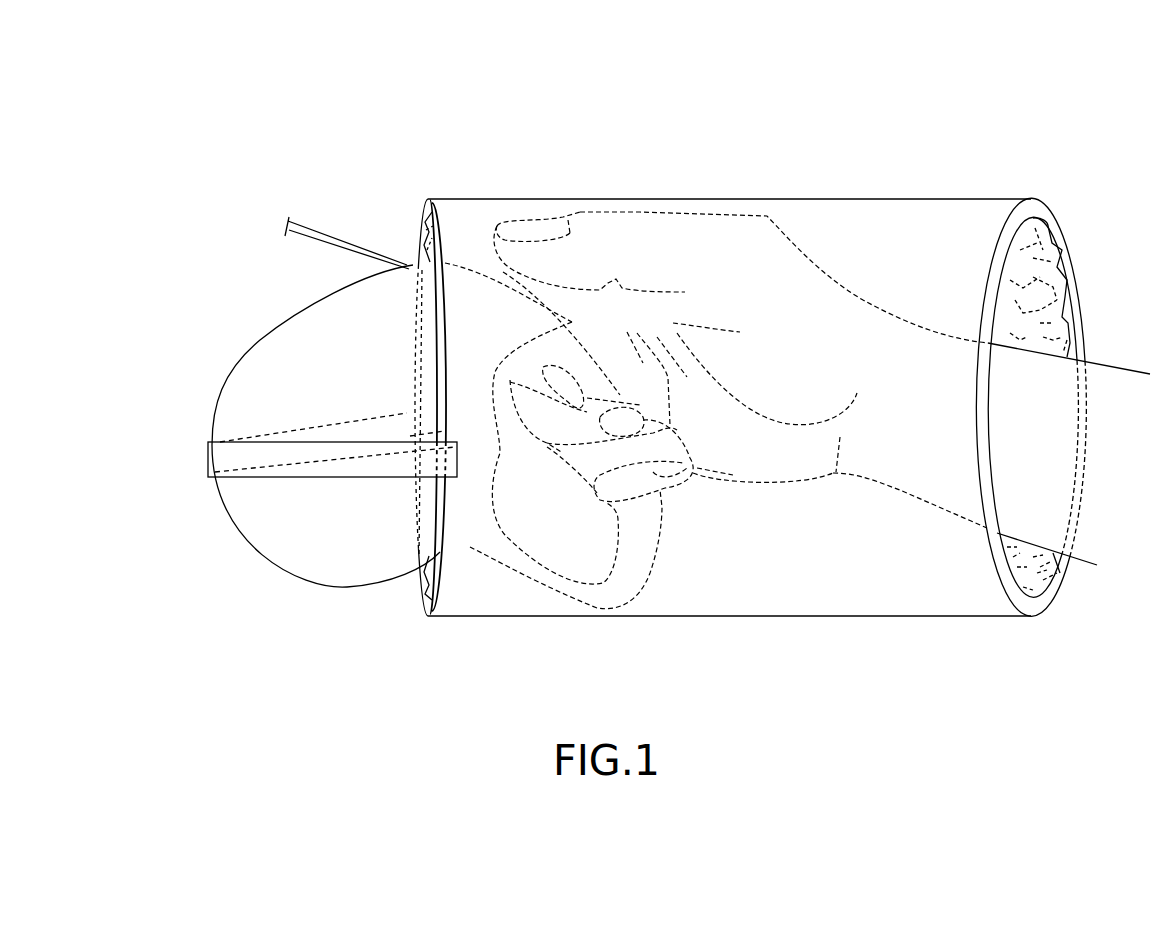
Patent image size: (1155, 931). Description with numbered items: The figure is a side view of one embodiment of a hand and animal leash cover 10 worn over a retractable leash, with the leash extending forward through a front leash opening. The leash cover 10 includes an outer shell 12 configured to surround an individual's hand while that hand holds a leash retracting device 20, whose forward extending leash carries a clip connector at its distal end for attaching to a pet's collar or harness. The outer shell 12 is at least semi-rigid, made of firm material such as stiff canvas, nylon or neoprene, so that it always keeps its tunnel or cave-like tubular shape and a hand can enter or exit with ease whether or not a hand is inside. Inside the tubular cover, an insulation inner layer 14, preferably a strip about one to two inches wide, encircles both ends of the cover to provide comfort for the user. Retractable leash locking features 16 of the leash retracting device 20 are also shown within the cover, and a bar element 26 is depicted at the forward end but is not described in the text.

The leash cover 10 is at (890, 160).
The outer shell 12 is at (1013, 200).
The insulation inner layer 14 is at (427, 250).
The retractable leash locking features 16 is at (502, 271).
The leash retracting device 20 is at (300, 327).
The handle bar 26 is at (208, 458).